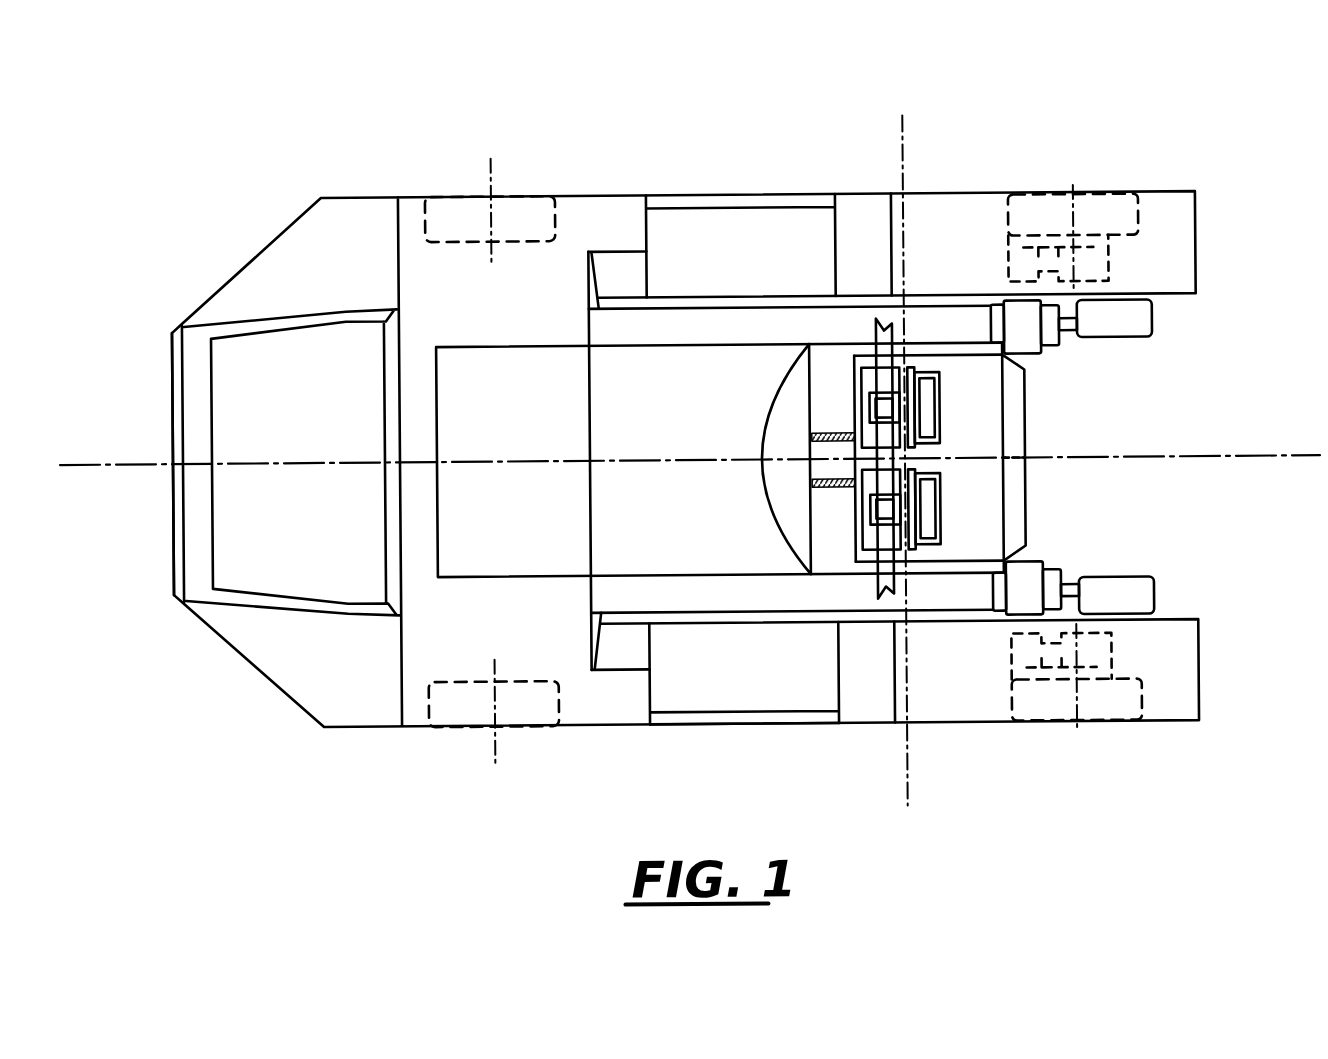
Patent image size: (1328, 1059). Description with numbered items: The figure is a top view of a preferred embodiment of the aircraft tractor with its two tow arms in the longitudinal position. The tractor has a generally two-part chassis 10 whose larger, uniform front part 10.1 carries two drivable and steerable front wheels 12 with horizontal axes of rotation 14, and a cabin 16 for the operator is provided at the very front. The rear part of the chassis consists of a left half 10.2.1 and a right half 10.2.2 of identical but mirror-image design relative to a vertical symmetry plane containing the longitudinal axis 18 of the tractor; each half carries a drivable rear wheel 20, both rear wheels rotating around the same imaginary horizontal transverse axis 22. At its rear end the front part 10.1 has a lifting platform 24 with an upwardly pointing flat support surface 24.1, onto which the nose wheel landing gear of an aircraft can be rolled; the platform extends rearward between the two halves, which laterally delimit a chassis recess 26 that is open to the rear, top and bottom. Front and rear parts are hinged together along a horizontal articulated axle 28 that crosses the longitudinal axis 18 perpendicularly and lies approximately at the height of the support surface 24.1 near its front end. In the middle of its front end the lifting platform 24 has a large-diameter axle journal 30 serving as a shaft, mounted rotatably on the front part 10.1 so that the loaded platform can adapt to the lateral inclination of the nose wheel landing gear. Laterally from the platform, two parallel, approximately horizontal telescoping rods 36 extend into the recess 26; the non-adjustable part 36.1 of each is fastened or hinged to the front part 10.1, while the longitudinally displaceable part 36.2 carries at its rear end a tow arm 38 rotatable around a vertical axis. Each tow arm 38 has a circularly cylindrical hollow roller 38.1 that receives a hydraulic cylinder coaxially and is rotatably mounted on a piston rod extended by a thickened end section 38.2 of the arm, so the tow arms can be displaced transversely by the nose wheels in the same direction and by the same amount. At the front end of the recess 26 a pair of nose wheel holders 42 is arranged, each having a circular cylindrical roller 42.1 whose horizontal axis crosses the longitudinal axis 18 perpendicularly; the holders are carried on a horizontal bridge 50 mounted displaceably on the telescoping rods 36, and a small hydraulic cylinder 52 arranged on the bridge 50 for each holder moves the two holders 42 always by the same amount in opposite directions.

The chassis 10 is at (739, 170).
The chassis front part 10.1 is at (737, 731).
The left half of chassis rear part 10.2.1 is at (982, 729).
The right half of chassis rear part 10.2.2 is at (982, 196).
The front wheels 12 is at (462, 198).
The axes of rotation 14 is at (497, 165).
The cabin 16 is at (233, 612).
The longitudinal axis 18 is at (1203, 474).
The rear wheel 20 is at (1090, 240).
The transverse axis 22 is at (1068, 200).
The lifting platform 24 is at (1036, 473).
The support surface 24.1 is at (964, 450).
The chassis recess 26 is at (1180, 447).
The articulated axle 28 is at (901, 115).
The axle journal 30 is at (829, 450).
The telescoping rods 36 is at (776, 296).
The non-adjustable part of telescoping rod 36.1 is at (688, 330).
The longitudinally displaceable part of telescoping rod 36.2 is at (1086, 426).
The tow arm 38 is at (1162, 326).
The hollow roller 38.1 is at (1125, 334).
The end section of tow arm 38.2 is at (1046, 330).
The nose wheel holders 42 is at (966, 420).
The roller 42.1 is at (962, 404).
The bridge 50 is at (884, 320).
The small hydraulic cylinder 52 is at (848, 410).